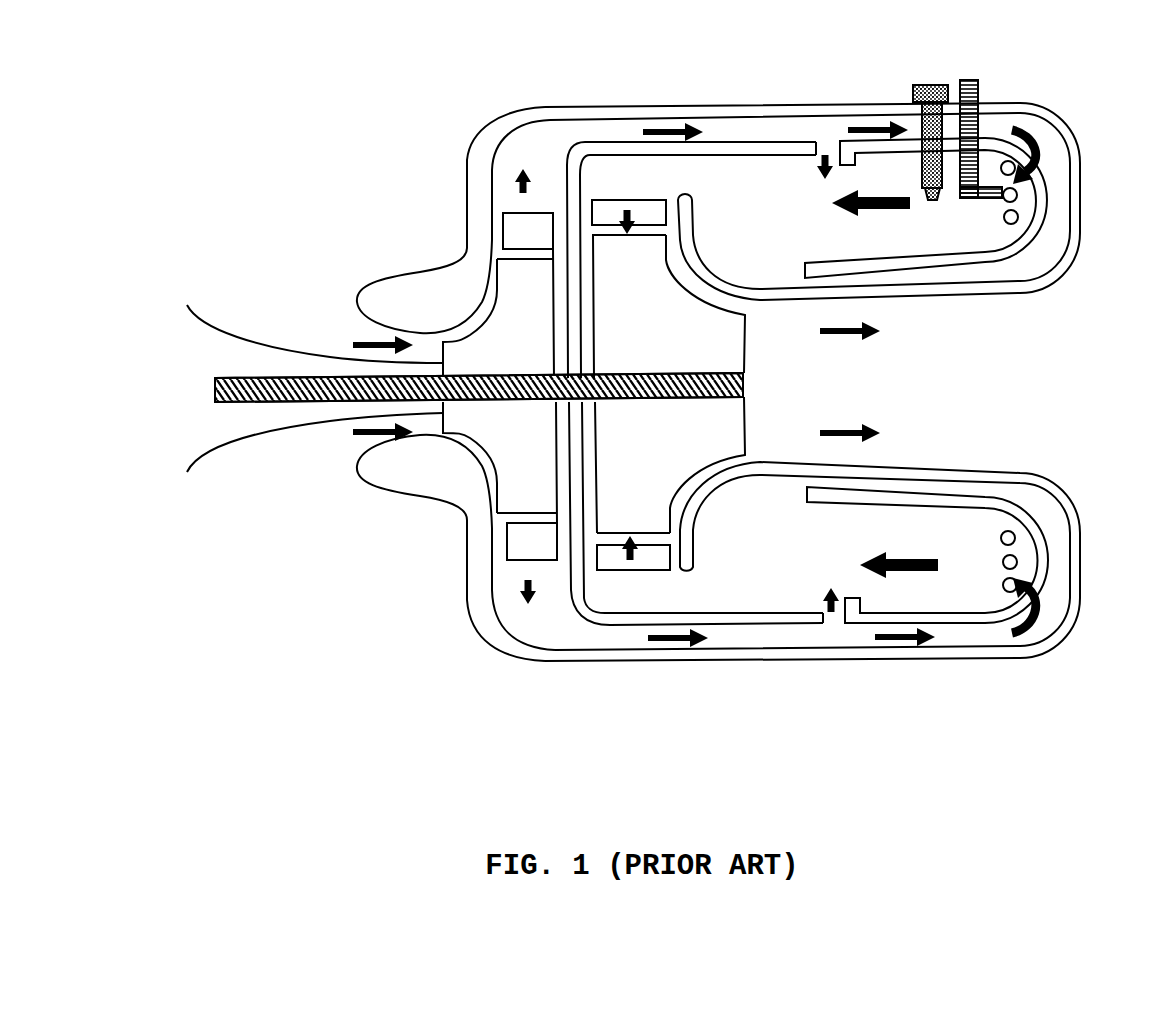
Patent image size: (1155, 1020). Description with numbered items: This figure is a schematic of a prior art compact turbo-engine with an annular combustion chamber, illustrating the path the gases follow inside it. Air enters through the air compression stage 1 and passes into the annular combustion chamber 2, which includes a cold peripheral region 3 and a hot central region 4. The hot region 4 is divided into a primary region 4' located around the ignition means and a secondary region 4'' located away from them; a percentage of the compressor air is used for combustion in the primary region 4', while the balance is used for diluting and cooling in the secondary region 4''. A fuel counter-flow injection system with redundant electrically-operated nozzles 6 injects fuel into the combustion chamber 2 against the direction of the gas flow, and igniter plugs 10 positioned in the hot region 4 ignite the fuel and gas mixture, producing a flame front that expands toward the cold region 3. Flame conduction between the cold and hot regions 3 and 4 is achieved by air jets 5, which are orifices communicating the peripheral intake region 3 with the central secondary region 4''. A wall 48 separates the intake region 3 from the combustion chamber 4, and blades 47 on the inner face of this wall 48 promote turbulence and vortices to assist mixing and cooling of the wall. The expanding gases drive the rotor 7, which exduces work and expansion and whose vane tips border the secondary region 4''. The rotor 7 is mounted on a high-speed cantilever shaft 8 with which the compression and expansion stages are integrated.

The air compression stage 1 is at (504, 318).
The annular combustion chamber 2 is at (860, 660).
The cold peripheral region 3 is at (733, 632).
The hot central region 4 is at (926, 242).
The primary region 4' is at (969, 526).
The secondary region 4'' is at (713, 122).
The air jets 5 is at (838, 628).
The electrically-operated nozzles 6 is at (975, 72).
The rotor 7 is at (693, 430).
The high-speed cantilever shaft 8 is at (353, 393).
The igniter plugs 10 is at (918, 86).
The blades 47 is at (860, 600).
The wall 48 is at (781, 140).